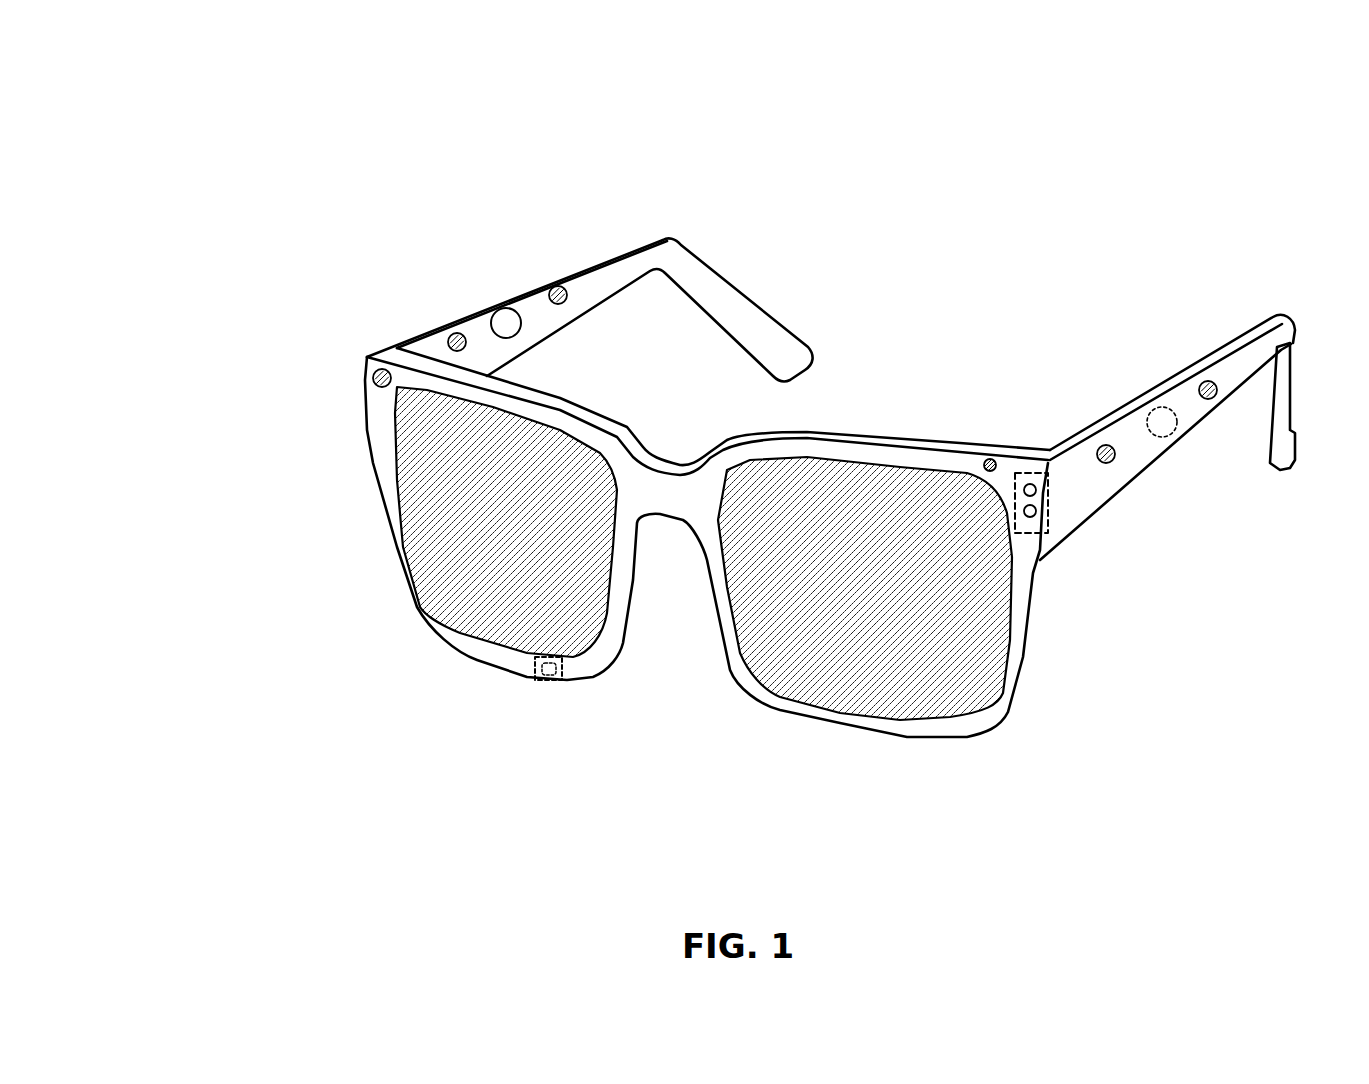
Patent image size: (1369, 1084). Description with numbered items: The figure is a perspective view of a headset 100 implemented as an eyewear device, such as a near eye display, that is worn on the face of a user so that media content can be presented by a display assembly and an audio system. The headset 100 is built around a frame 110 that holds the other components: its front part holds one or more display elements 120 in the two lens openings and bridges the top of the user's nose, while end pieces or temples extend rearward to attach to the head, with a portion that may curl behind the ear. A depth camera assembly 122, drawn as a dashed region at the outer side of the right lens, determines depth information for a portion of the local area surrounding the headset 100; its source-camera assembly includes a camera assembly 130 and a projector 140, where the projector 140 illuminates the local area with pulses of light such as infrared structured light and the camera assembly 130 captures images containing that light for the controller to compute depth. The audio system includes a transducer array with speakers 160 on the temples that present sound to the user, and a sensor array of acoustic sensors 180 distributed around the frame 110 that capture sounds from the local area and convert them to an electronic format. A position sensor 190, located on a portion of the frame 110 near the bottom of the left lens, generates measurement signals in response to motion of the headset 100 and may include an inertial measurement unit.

The headset 100 is at (108, 95).
The frame 110 is at (1277, 313).
The display element 120 is at (447, 523).
The depth camera assembly 122 is at (1050, 500).
The camera assembly 130 is at (1028, 484).
The projector 140 is at (1032, 517).
The speaker 160 is at (516, 310).
The acoustic sensor 180 is at (383, 370).
The position sensor 190 is at (547, 678).